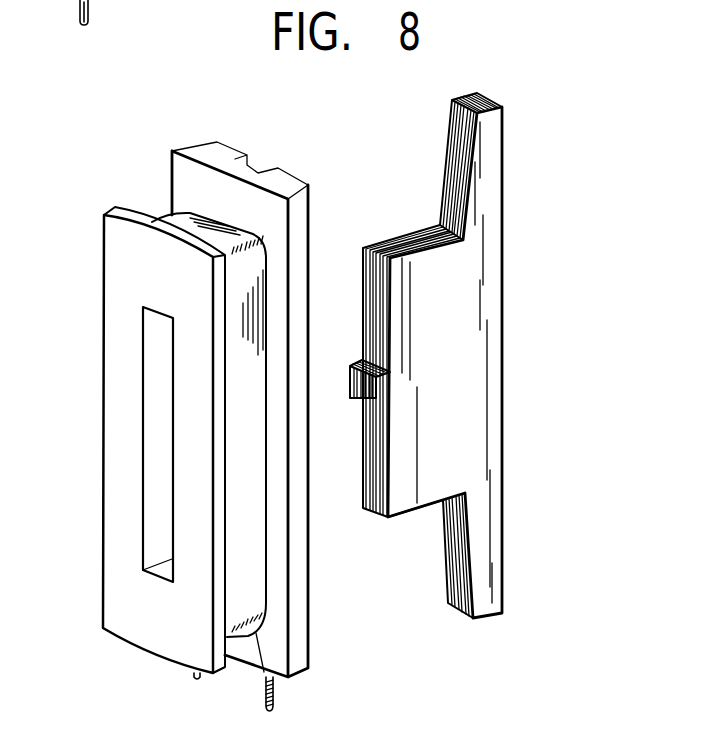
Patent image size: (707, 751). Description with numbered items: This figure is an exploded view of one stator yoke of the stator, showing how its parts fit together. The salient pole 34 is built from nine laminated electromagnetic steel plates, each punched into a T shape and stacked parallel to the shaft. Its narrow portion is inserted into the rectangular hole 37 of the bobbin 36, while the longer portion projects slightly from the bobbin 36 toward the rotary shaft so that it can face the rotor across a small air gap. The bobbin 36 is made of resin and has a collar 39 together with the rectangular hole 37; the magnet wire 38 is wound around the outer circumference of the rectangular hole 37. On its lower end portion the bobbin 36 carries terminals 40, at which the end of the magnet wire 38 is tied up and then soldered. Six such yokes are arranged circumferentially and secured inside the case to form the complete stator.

The salient pole 34 is at (467, 303).
The bobbin 36 is at (297, 171).
The rectangular hole 37 is at (153, 480).
The magnet wire 38 is at (183, 222).
The collar 39 is at (122, 268).
The terminals 40 is at (193, 677).